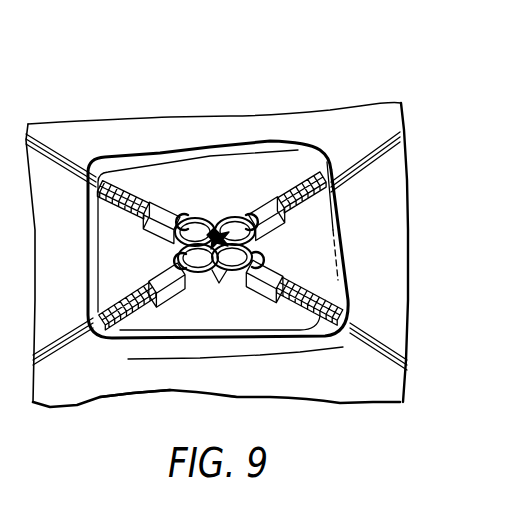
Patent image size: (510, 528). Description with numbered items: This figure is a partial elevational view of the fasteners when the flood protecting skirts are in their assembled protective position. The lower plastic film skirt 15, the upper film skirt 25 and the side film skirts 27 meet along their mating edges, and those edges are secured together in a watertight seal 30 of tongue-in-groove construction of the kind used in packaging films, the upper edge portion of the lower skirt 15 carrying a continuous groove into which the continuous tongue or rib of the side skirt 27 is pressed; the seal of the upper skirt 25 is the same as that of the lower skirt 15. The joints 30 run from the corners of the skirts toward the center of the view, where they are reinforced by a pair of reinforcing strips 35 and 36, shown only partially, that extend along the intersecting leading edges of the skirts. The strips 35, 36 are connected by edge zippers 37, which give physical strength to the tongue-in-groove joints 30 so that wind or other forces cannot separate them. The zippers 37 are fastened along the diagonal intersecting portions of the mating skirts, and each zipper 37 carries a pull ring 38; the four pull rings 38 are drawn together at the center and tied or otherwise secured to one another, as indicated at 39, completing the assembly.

The lower plastic film skirt 15 is at (144, 383).
The upper film skirt 25 is at (170, 120).
The side film skirt 27 is at (71, 268).
The seal 30 is at (60, 160).
The reinforcing strip 35 is at (128, 196).
The reinforcing strip 36 is at (100, 222).
The edge zipper 37 is at (158, 239).
The pull ring 38 is at (187, 216).
The pull ring tie 39 is at (211, 222).